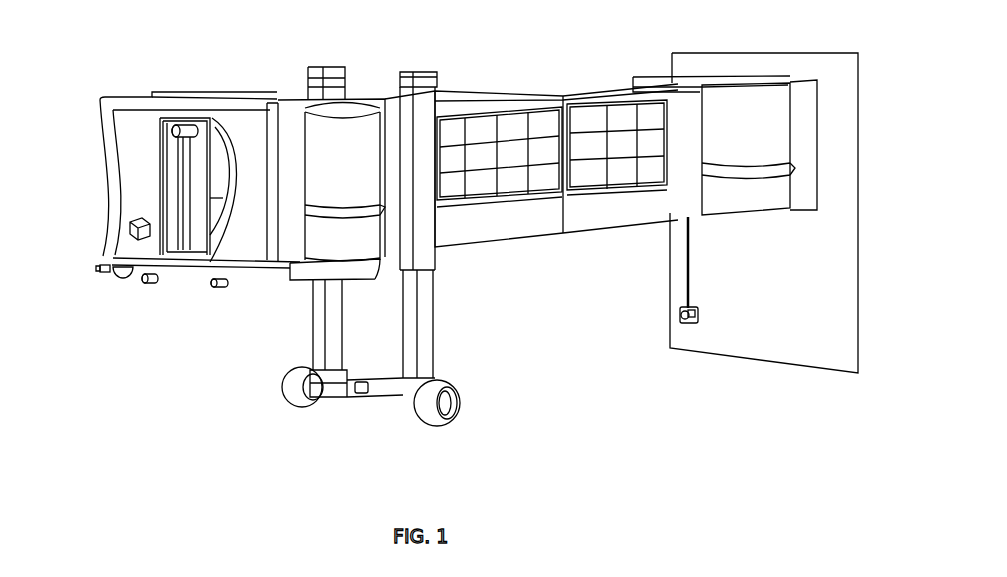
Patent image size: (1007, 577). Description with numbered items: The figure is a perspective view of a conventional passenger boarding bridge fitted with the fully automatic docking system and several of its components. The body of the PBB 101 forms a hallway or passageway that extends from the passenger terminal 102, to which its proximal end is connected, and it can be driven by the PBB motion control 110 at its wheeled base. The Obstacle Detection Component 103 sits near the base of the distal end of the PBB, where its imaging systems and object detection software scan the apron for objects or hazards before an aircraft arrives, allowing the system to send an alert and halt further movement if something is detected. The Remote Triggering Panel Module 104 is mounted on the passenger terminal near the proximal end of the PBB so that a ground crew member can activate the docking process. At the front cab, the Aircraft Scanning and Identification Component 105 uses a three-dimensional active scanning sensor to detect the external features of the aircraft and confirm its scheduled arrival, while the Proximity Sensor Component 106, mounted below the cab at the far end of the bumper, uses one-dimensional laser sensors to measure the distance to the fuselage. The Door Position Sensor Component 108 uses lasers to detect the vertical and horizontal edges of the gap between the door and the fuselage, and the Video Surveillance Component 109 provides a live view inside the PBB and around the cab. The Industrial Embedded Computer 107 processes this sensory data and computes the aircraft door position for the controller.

The PBB 101 is at (563, 95).
The passenger terminal 102 is at (802, 108).
The Obstacle Detection Component 103 is at (360, 393).
The Remote Triggering Panel Module 104 is at (680, 310).
The Aircraft Scanning and Identification Component 105 is at (100, 264).
The Proximity Sensor Component 106 is at (213, 284).
The Industrial Embedded Computer 107 is at (222, 228).
The Door Position Sensor Component 108 is at (130, 235).
The Video Surveillance Component 109 is at (187, 123).
The PBB motion control 110 is at (433, 383).